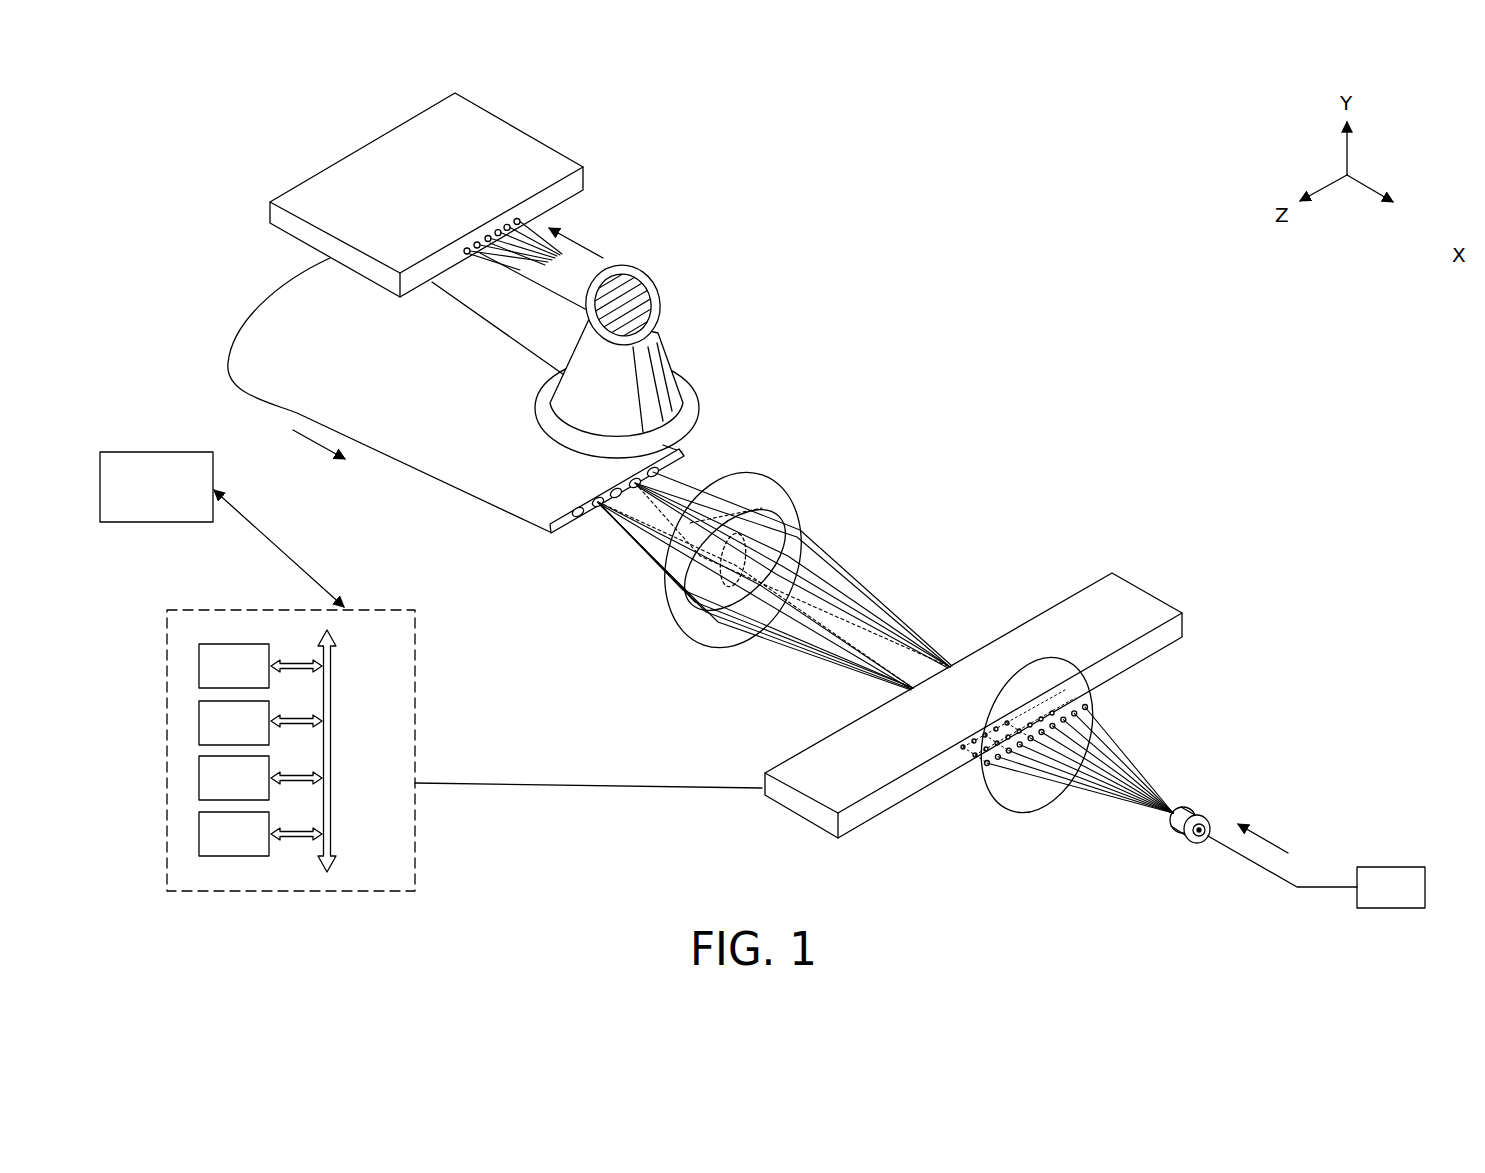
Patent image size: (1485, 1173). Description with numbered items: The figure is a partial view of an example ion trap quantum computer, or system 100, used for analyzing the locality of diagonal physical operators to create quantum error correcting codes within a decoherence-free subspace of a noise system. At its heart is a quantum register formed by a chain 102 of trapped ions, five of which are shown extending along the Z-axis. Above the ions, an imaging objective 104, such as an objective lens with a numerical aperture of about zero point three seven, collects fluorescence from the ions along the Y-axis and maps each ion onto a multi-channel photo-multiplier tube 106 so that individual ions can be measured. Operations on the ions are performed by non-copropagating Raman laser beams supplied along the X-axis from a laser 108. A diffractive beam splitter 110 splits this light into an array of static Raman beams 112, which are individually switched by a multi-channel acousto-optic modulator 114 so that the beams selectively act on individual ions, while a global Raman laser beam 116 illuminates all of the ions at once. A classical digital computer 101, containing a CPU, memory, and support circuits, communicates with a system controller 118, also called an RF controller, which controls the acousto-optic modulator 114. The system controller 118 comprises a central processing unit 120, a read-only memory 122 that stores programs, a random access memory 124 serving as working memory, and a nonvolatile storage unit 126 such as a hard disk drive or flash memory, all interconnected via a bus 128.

The system 100 is at (930, 392).
The classical computer 101 is at (156, 487).
The chain of trapped ions 102 is at (597, 543).
The imaging objective 104 is at (665, 353).
The multi-channel photo-multiplier tube 106 is at (517, 127).
The laser 108 is at (1316, 866).
The diffractive beam splitter 110 is at (1190, 803).
The array of static Raman beams 112 is at (687, 643).
The multi-channel acousto-optic modulator 114 is at (1145, 593).
The global Raman laser beam 116 is at (386, 490).
The system controller 118 is at (250, 610).
The central processing unit 120 is at (260, 666).
The read-only memory 122 is at (260, 723).
The random access memory 124 is at (260, 778).
The storage unit 126 is at (260, 834).
The bus 128 is at (336, 756).